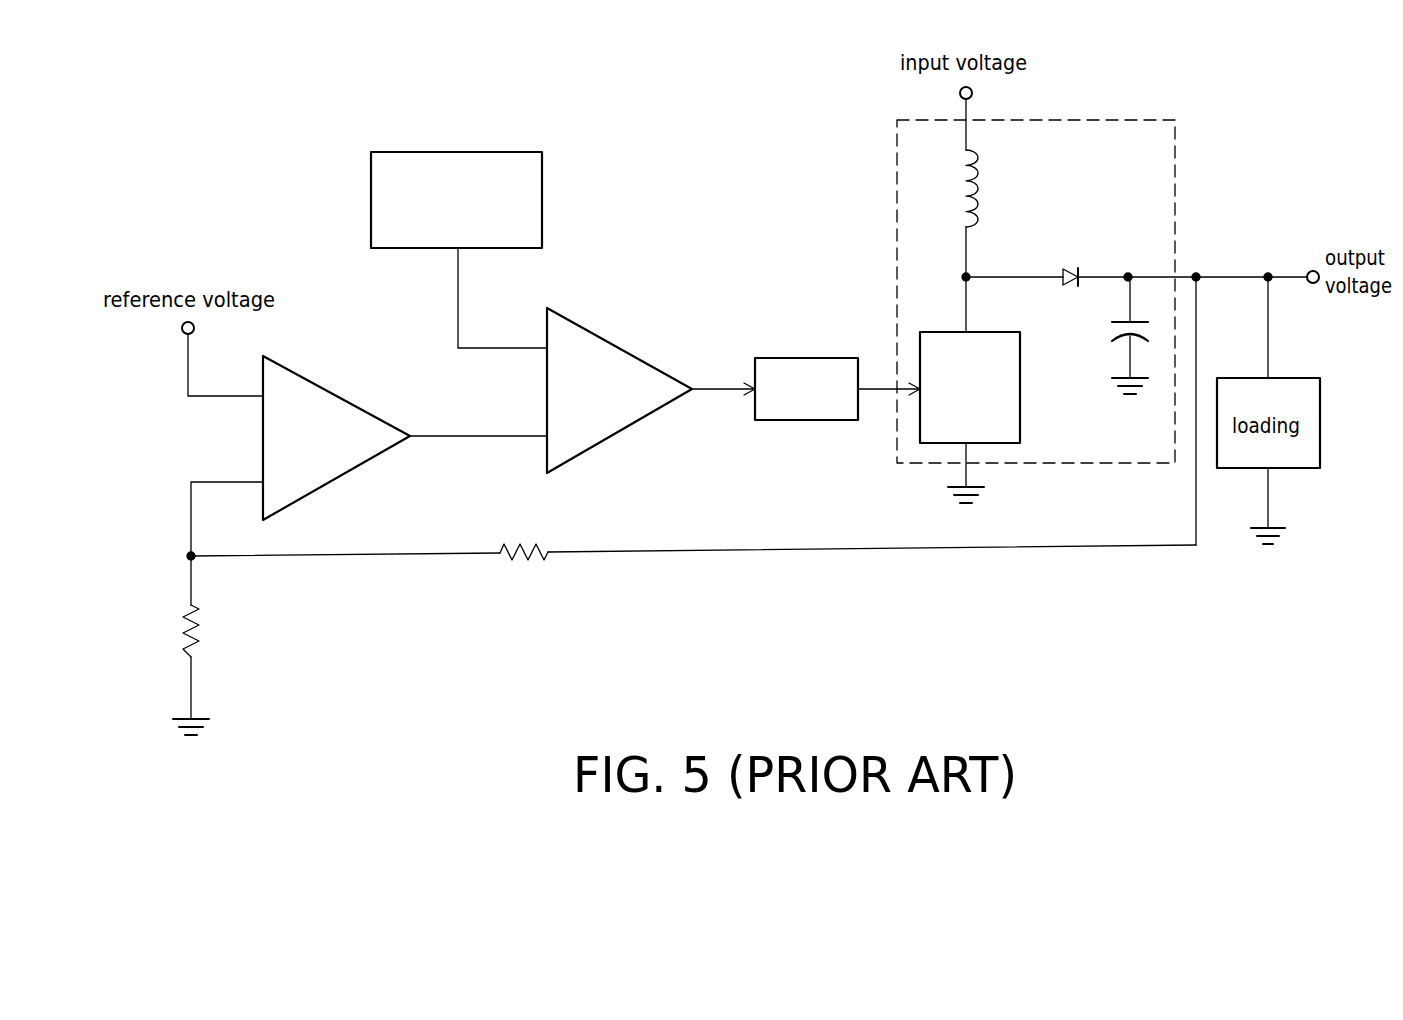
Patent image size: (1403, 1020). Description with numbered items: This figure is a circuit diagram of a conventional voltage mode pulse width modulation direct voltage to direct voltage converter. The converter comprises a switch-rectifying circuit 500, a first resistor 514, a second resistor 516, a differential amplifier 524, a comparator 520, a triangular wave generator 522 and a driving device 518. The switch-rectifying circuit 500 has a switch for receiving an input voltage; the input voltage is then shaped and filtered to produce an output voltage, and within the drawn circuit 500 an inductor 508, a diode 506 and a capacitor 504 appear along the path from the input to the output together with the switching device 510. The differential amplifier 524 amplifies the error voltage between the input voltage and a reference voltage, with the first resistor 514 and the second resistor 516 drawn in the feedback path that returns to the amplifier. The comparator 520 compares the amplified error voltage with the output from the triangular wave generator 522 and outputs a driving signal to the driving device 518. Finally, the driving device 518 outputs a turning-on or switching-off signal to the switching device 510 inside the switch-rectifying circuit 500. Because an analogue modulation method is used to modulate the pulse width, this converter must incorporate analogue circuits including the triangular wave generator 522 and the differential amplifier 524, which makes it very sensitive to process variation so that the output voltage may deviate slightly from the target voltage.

The switch-rectifying circuit 500 is at (1175, 121).
The capacitor 504 is at (1140, 310).
The diode 506 is at (1072, 267).
The inductor 508 is at (980, 196).
The switching device 510 is at (1021, 386).
The first resistor 514 is at (538, 565).
The second resistor 516 is at (200, 633).
The driving device 518 is at (805, 358).
The comparator 520 is at (623, 350).
The triangular wave generator 522 is at (542, 188).
The differential amplifier 524 is at (337, 393).